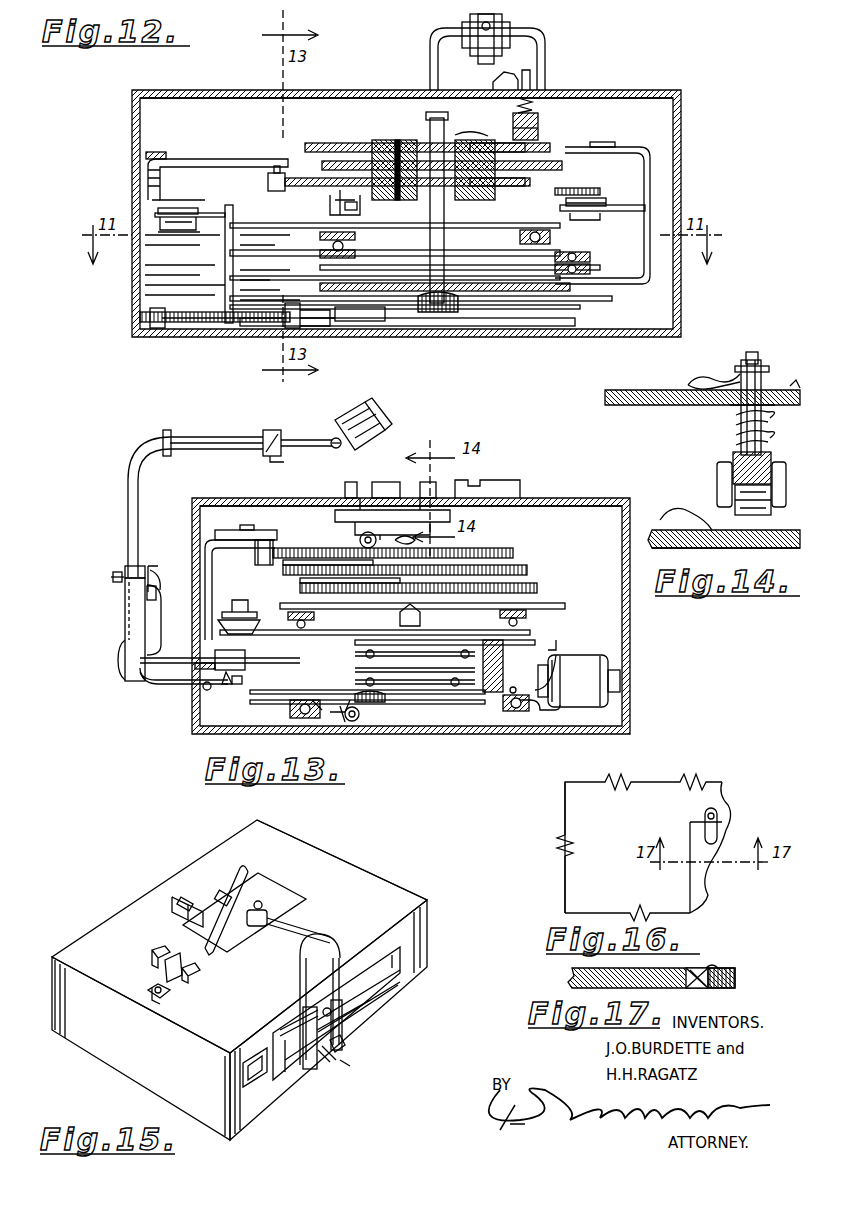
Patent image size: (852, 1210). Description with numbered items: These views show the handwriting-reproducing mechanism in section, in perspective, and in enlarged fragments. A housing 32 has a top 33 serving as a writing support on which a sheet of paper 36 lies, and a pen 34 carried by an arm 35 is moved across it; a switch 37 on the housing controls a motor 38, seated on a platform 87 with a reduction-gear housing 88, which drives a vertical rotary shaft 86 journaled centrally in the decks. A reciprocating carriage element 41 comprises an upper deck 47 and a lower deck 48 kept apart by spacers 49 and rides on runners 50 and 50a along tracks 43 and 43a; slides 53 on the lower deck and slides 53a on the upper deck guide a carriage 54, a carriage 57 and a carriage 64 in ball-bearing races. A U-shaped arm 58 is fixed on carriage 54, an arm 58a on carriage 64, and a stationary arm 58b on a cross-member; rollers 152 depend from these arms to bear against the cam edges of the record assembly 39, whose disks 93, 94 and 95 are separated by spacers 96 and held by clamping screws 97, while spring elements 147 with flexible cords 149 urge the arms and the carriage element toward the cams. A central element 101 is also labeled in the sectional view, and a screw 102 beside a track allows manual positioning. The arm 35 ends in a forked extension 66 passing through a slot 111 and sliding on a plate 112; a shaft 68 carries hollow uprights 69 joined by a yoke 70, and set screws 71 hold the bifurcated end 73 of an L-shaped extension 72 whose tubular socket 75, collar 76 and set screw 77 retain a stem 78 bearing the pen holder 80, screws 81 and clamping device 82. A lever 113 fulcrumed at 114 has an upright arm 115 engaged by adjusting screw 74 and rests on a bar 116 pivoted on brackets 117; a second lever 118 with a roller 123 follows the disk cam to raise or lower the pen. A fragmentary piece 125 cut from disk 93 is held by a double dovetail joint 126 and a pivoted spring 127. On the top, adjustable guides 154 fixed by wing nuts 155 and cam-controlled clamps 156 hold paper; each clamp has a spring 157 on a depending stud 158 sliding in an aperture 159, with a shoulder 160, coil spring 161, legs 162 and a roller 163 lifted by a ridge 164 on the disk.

In FIG. 12, the housing 32 is at (132, 111).
In FIG. 13, the housing 32 is at (630, 636).
In FIG. 15, the housing 32 is at (362, 858).
In FIG. 12, the top 33 is at (232, 96).
In FIG. 13, the top 33 is at (580, 498).
In FIG. 14, the top 33 is at (668, 392).
In FIG. 15, the top 33 is at (246, 891).
In FIG. 15, the pen 34 is at (236, 870).
In FIG. 13, the arm 35 is at (125, 615).
In FIG. 15, the arm 35 is at (325, 936).
In FIG. 15, the sheet of paper 36 is at (262, 874).
In FIG. 15, the switch 37 is at (258, 1080).
In FIG. 13, the motor 38 is at (579, 681).
In FIG. 12, the record assembly 39 is at (335, 146).
In FIG. 13, the record assembly 39 is at (283, 571).
In FIG. 12, the reciprocating carriage element 41 is at (566, 308).
In FIG. 13, the track 43 is at (300, 716).
In FIG. 13, the track 43a is at (565, 606).
In FIG. 12, the upper deck 47 is at (300, 228).
In FIG. 13, the upper deck 47 is at (510, 636).
In FIG. 12, the lower deck 48 is at (594, 298).
In FIG. 13, the lower deck 48 is at (488, 704).
In FIG. 13, the spacers 49 is at (503, 670).
In FIG. 13, the runners 50 is at (320, 731).
In FIG. 13, the runners 50a is at (575, 620).
In FIG. 12, the slides 53 is at (330, 285).
In FIG. 13, the slides 53 is at (442, 694).
In FIG. 12, the slides 53a is at (325, 238).
In FIG. 12, the carriage 54 is at (586, 271).
In FIG. 12, the carriage 57 is at (582, 258).
In FIG. 12, the U-shaped arm 58 is at (642, 147).
In FIG. 13, the arm 58a is at (213, 538).
In FIG. 12, the arm 58b is at (195, 158).
In FIG. 12, the carriage 64 is at (550, 246).
In FIG. 13, the forked extension 66 is at (174, 658).
In FIG. 15, the forked extension 66 is at (310, 1065).
In FIG. 15, the shaft 68 is at (338, 1055).
In FIG. 13, the hollow uprights 69 is at (125, 630).
In FIG. 15, the hollow uprights 69 is at (350, 1044).
In FIG. 13, the yoke 70 is at (150, 578).
In FIG. 13, the set screws 71 is at (156, 598).
In FIG. 13, the L-shaped extension 72 is at (128, 516).
In FIG. 15, the L-shaped extension 72 is at (300, 982).
In FIG. 13, the bifurcated end 73 is at (125, 568).
In FIG. 15, the bifurcated end 73 is at (336, 1000).
In FIG. 13, the adjusting screw 74 is at (114, 580).
In FIG. 15, the adjusting screw 74 is at (340, 1010).
In FIG. 13, the tubular socket 75 is at (222, 433).
In FIG. 15, the tubular socket 75 is at (280, 922).
In FIG. 13, the collar 76 is at (272, 436).
In FIG. 13, the set screw 77 is at (278, 449).
In FIG. 15, the set screw 77 is at (265, 910).
In FIG. 13, the stem 78 is at (300, 441).
In FIG. 13, the pen holder 80 is at (338, 449).
In FIG. 15, the pen holder 80 is at (222, 893).
In FIG. 13, the screws 81 is at (345, 422).
In FIG. 13, the adjustable clamping device 82 is at (372, 423).
In FIG. 13, the vertical rotary shaft 86 is at (432, 632).
In FIG. 13, the platform 87 is at (548, 722).
In FIG. 13, the housing 88 is at (560, 656).
In FIG. 13, the disk 93 is at (512, 552).
In FIG. 14, the disk 93 is at (666, 546).
In FIG. 16, the disk 93 is at (644, 847).
In FIG. 17, the disk 93 is at (572, 982).
In FIG. 13, the disk 94 is at (528, 570).
In FIG. 13, the disk 95 is at (538, 588).
In FIG. 13, the spacers 96 is at (340, 584).
In FIG. 12, the clamping screws 97 is at (396, 150).
In FIG. 12, the spindle 101 is at (436, 150).
In FIG. 12, the screw 102 is at (196, 309).
In FIG. 15, the slot 111 is at (400, 974).
In FIG. 15, the plate 112 is at (360, 1010).
In FIG. 13, the lever 113 is at (148, 676).
In FIG. 15, the lever 113 is at (345, 1020).
In FIG. 15, the fulcrum 114 is at (330, 1066).
In FIG. 13, the upright arm 115 is at (155, 624).
In FIG. 15, the upright arm 115 is at (352, 1068).
In FIG. 13, the bar 116 is at (207, 690).
In FIG. 13, the brackets 117 is at (238, 686).
In FIG. 13, the second lever 118 is at (258, 640).
In FIG. 12, the roller 123 is at (330, 202).
In FIG. 13, the roller 123 is at (414, 618).
In FIG. 16, the fragmentary piece 125 is at (690, 823).
In FIG. 17, the fragmentary piece 125 is at (692, 970).
In FIG. 17, the double dovetail joint 126 is at (696, 986).
In FIG. 16, the pivoted spring 127 is at (716, 830).
In FIG. 17, the pivoted spring 127 is at (720, 967).
In FIG. 12, the spring elements 147 is at (600, 192).
In FIG. 12, the flexible cord 149 is at (616, 209).
In FIG. 12, the rollers 152 is at (268, 181).
In FIG. 13, the rollers 152 is at (255, 553).
In FIG. 12, the adjustable guides 154 is at (540, 89).
In FIG. 13, the adjustable guides 154 is at (500, 496).
In FIG. 14, the adjustable guides 154 is at (760, 364).
In FIG. 15, the adjustable guides 154 is at (178, 915).
In FIG. 15, the wing nuts 155 is at (172, 996).
In FIG. 14, the automatic cam-controlled clamps 156 is at (742, 366).
In FIG. 15, the automatic cam-controlled clamps 156 is at (152, 952).
In FIG. 14, the spring 157 is at (718, 384).
In FIG. 14, the depending stud 158 is at (740, 440).
In FIG. 14, the aperture 159 is at (738, 408).
In FIG. 14, the shoulder 160 is at (733, 464).
In FIG. 14, the coil spring 161 is at (768, 420).
In FIG. 14, the legs 162 is at (782, 465).
In FIG. 12, the roller 163 is at (540, 128).
In FIG. 14, the roller 163 is at (730, 514).
In FIG. 12, the ridge 164 is at (481, 164).
In FIG. 14, the ridge 164 is at (685, 519).